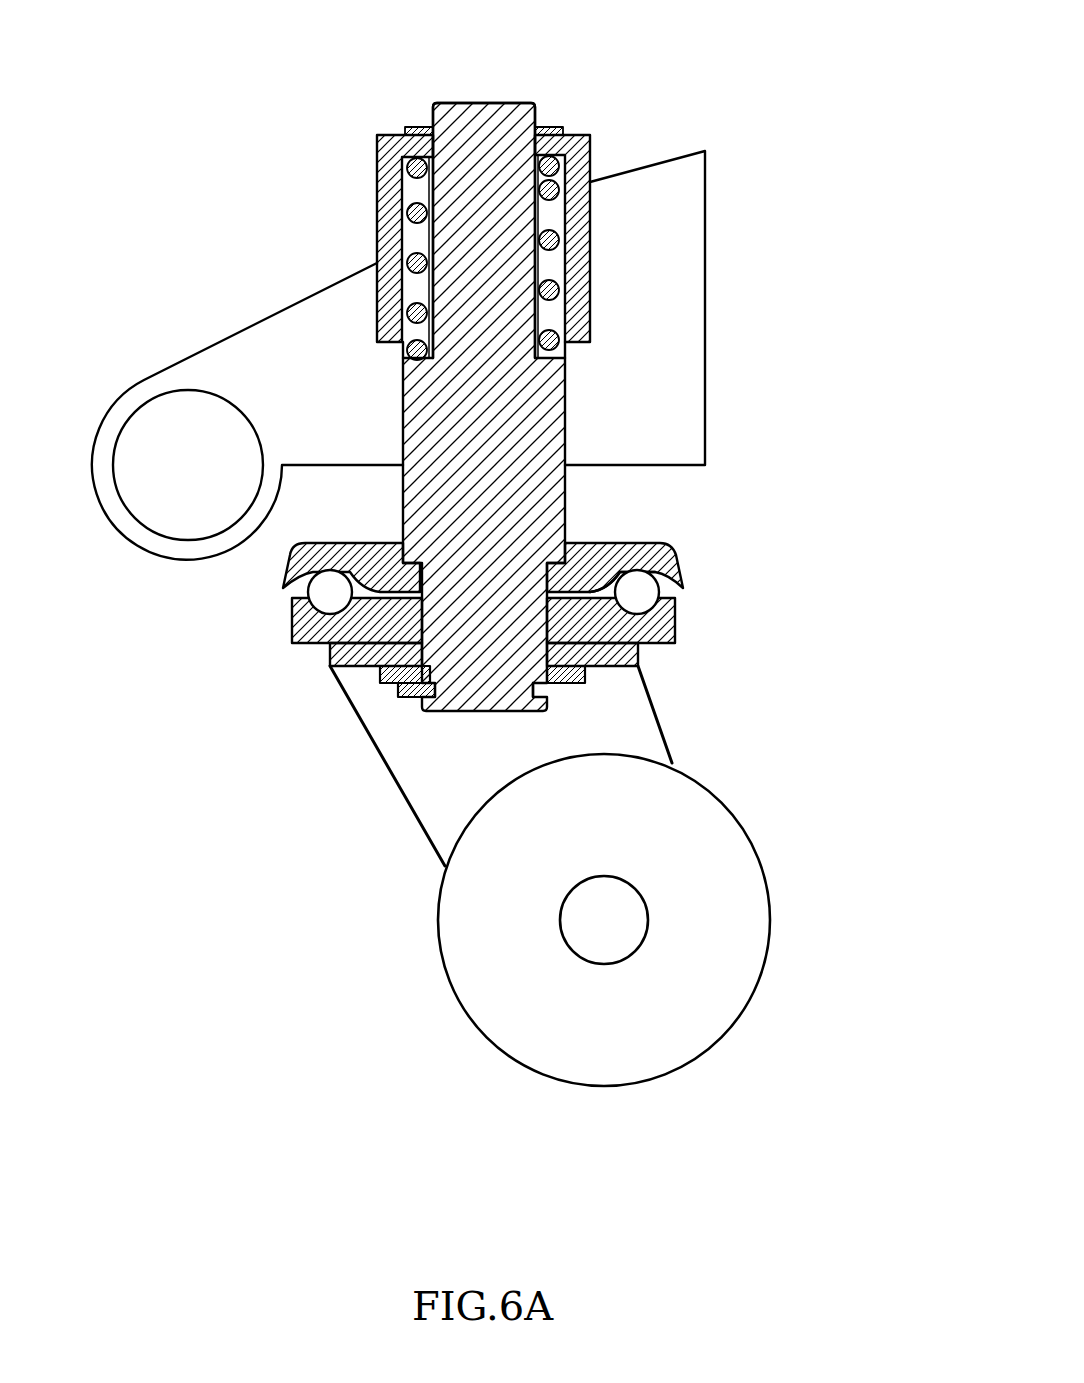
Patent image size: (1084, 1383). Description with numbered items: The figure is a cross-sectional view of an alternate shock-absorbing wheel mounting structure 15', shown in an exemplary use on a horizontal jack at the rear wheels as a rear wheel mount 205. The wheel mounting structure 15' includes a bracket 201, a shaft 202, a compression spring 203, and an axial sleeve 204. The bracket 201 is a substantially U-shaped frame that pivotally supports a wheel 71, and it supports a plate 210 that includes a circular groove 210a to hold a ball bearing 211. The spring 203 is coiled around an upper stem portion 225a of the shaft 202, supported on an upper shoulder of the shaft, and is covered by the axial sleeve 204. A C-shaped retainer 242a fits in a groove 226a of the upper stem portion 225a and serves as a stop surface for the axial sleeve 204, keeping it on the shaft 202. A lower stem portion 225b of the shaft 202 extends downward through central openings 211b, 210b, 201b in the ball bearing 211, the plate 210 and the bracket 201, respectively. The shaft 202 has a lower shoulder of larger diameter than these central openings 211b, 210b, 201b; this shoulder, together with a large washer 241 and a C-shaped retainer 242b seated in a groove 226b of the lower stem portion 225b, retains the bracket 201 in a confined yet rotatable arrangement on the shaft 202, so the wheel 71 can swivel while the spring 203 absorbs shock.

The wheel mounting structure 15' is at (550, 619).
The wheel 71 is at (448, 980).
The bracket 201 is at (405, 778).
The central opening of bracket 201b is at (640, 650).
The shaft 202 is at (512, 510).
The compression spring 203 is at (590, 180).
The axial sleeve 204 is at (377, 205).
The rear wheel mount 205 is at (705, 325).
The plate 210 is at (302, 645).
The circular groove 210a is at (317, 613).
The central opening of plate 210b is at (590, 561).
The ball bearing 211 is at (663, 557).
The central opening of ball bearing 211b is at (627, 543).
The upper stem portion 225a is at (482, 118).
The lower stem portion 225b is at (380, 677).
The groove of upper stem portion 226a is at (437, 127).
The groove of lower stem portion 226b is at (585, 683).
The large washer 241 is at (600, 668).
The C-shaped retainer 242a is at (541, 127).
The C-shaped retainer 242b is at (407, 698).